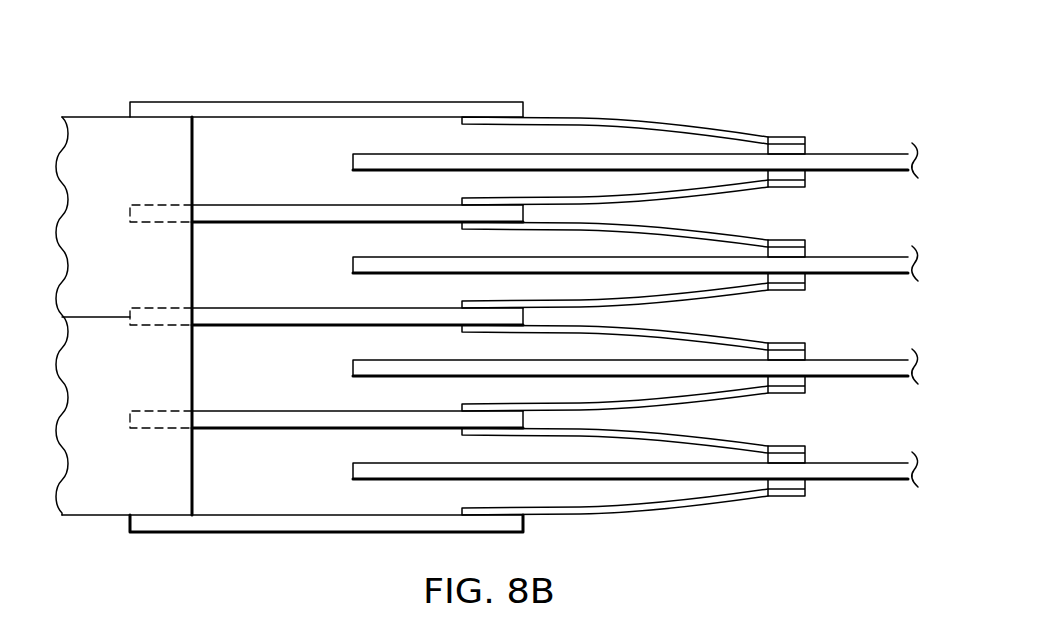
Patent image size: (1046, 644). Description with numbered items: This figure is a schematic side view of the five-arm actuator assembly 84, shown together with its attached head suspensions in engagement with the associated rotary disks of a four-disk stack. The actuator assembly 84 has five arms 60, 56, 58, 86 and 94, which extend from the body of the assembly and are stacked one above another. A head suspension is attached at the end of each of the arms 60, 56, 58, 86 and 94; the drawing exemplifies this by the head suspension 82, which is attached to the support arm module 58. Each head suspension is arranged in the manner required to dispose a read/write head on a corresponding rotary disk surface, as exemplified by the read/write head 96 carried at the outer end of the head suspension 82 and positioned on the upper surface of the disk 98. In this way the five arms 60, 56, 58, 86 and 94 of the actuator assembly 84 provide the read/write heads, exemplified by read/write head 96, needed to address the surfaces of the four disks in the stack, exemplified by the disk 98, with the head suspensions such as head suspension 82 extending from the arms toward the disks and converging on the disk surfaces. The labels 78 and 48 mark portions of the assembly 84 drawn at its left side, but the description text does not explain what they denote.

The five-arm actuator assembly 84 is at (97, 92).
The arm 94 is at (291, 101).
The housing upper portion 78 is at (150, 167).
The housing lower portion 48 is at (150, 380).
The arm 86 is at (291, 204).
The support arm module 58 is at (291, 307).
The arm 56 is at (291, 410).
The arm 60 is at (291, 514).
The head suspension 82 is at (733, 333).
The read/write head 96 is at (806, 352).
The disk 98 is at (878, 378).